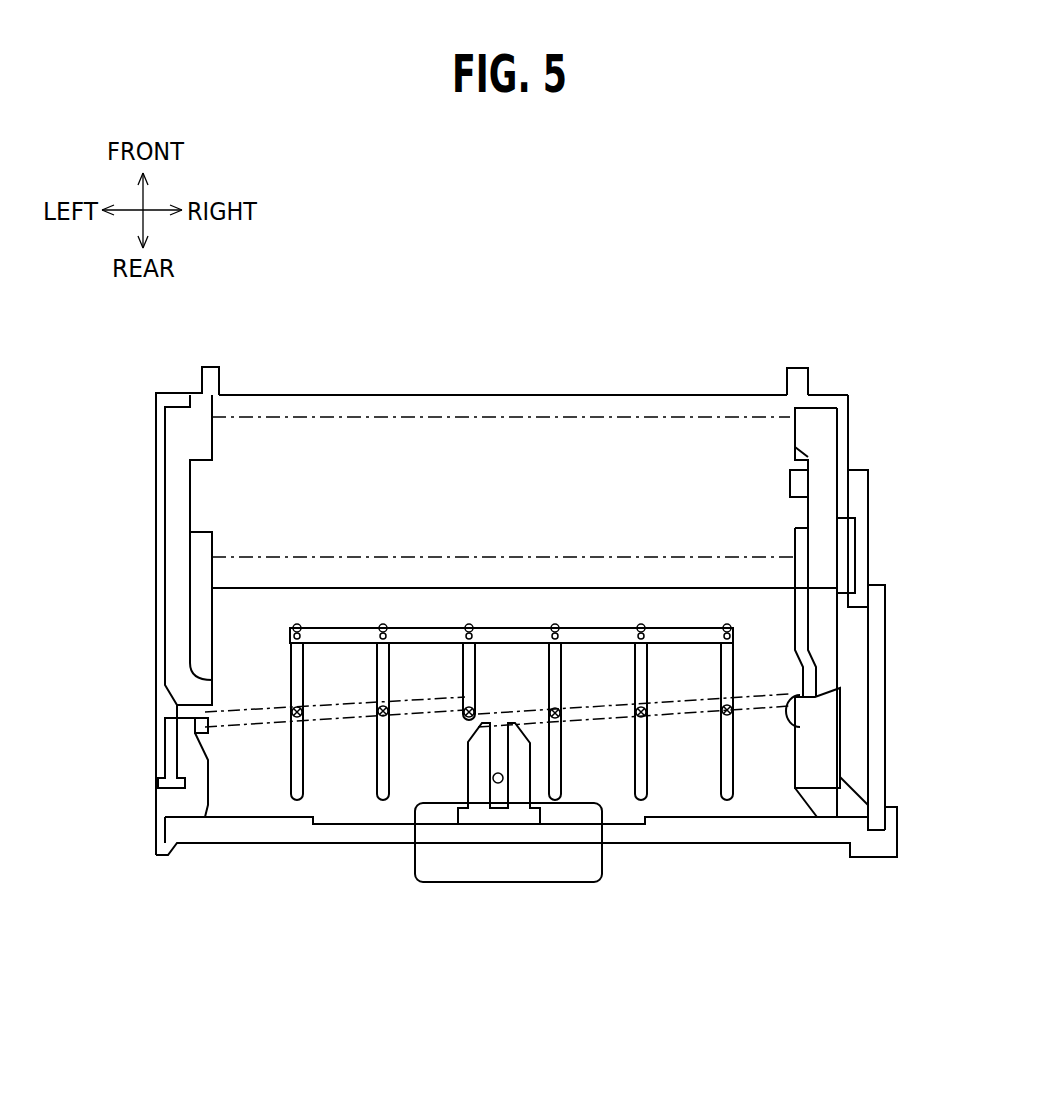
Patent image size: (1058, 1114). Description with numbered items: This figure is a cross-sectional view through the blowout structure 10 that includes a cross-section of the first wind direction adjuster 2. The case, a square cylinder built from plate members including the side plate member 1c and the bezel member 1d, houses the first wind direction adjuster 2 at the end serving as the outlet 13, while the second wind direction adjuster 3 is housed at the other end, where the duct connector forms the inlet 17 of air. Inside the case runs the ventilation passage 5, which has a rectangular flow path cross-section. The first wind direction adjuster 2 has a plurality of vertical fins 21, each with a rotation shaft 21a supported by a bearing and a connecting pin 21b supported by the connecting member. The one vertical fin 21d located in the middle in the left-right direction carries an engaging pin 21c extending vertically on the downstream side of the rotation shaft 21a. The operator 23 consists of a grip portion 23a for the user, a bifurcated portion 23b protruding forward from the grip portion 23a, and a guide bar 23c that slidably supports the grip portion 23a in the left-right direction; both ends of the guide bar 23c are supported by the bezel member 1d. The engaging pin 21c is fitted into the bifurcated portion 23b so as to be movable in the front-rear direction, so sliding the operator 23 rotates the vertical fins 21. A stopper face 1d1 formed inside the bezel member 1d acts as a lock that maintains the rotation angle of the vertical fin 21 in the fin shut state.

The blowout structure 10 is at (578, 312).
The side plate member 1c is at (156, 395).
The bezel member 1d is at (155, 820).
The stopper face 1d1 is at (195, 733).
The first wind direction adjuster 2 is at (246, 788).
The second wind direction adjuster 3 is at (720, 480).
The ventilation passage 5 is at (353, 685).
The outlet 13 is at (800, 857).
The inlet 17 is at (787, 386).
The vertical fin 21 is at (511, 776).
The rotation shaft 21a is at (473, 710).
The connecting pin 21b is at (463, 628).
The engaging pin 21c is at (493, 778).
The vertical fin located in the middle 21d is at (465, 675).
The operator 23 is at (559, 866).
The grip portion 23a is at (463, 887).
The bifurcated portion 23b is at (518, 770).
The guide bar 23c is at (662, 830).